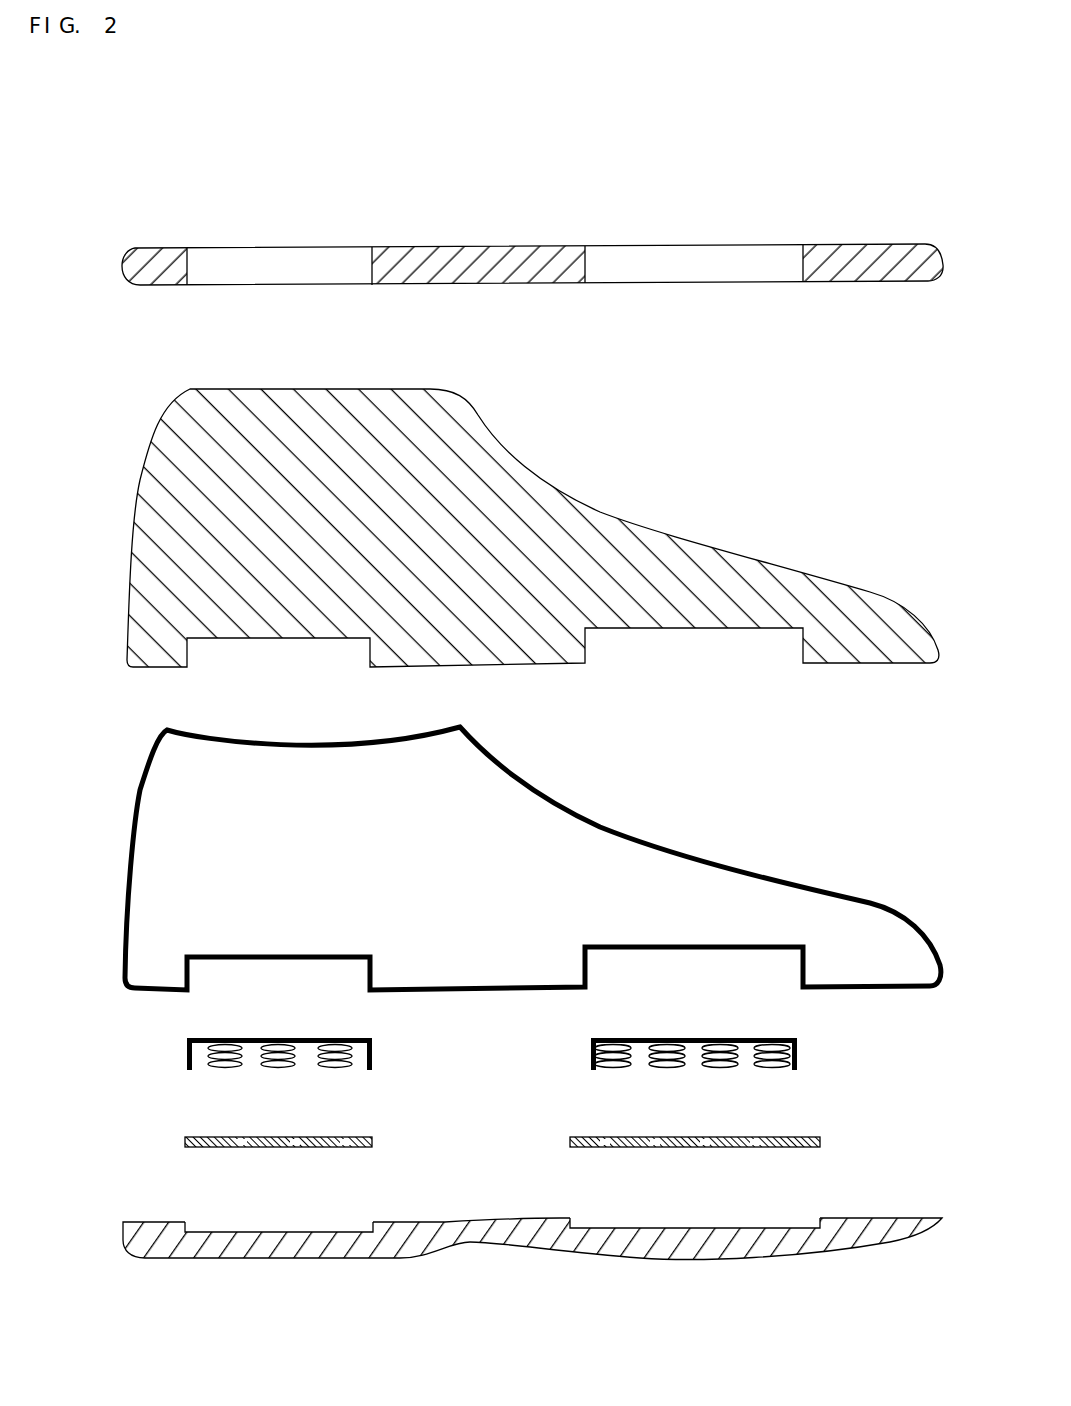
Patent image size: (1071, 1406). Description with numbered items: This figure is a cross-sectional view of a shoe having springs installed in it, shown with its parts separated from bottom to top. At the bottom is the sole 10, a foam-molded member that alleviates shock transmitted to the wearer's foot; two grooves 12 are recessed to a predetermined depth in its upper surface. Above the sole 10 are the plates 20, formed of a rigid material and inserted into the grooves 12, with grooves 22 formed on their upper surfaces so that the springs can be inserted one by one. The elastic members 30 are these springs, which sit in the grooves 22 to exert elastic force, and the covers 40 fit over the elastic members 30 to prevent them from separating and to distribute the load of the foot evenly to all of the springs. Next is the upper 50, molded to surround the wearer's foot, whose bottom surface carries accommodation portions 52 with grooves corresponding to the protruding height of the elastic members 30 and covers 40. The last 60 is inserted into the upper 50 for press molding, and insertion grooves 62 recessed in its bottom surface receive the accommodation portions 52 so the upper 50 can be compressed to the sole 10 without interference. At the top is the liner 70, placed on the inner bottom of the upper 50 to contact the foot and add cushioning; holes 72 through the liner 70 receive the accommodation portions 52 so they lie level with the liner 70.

The sole 10 is at (519, 1254).
The grooves 12 is at (298, 1222).
The plates 20 is at (185, 1140).
The grooves 22 is at (223, 1137).
The elastic members 30 is at (218, 1060).
The covers 40 is at (186, 1049).
The upper 50 is at (578, 808).
The accommodation portions 52 is at (303, 970).
The last 60 is at (560, 542).
The insertion grooves 62 is at (220, 657).
The liner 70 is at (497, 258).
The holes 72 is at (265, 265).